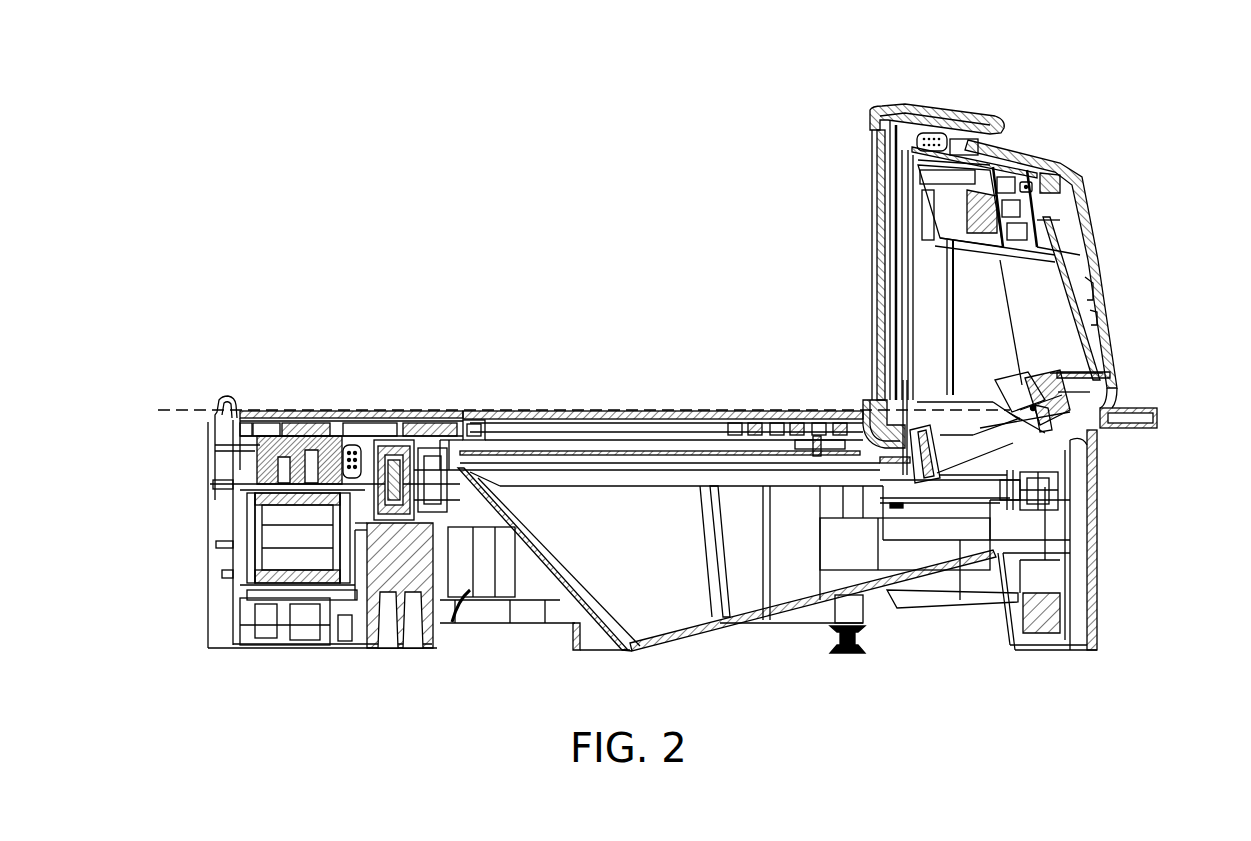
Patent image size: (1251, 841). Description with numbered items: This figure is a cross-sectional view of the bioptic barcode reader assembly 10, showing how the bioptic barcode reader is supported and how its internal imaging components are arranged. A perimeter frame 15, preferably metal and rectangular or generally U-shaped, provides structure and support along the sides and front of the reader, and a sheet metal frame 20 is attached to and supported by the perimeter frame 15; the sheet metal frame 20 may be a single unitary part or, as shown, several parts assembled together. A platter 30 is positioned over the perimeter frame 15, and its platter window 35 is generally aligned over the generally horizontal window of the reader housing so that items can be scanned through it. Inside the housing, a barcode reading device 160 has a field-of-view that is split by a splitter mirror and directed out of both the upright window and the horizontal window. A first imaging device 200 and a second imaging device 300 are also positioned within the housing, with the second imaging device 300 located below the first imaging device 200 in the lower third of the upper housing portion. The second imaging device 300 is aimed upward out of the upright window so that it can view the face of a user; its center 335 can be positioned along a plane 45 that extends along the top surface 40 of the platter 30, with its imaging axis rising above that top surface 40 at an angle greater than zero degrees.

The bioptic barcode reader assembly 10 is at (165, 118).
The perimeter frame 15 is at (533, 613).
The sheet metal frame 20 is at (232, 474).
The platter 30 is at (433, 410).
The platter window 35 is at (556, 410).
The top surface 40 is at (293, 398).
The plane 45 is at (935, 386).
The barcode reading device 160 is at (1060, 483).
The first imaging device 200 is at (987, 207).
The second imaging device 300 is at (1013, 383).
The center 335 is at (1110, 427).